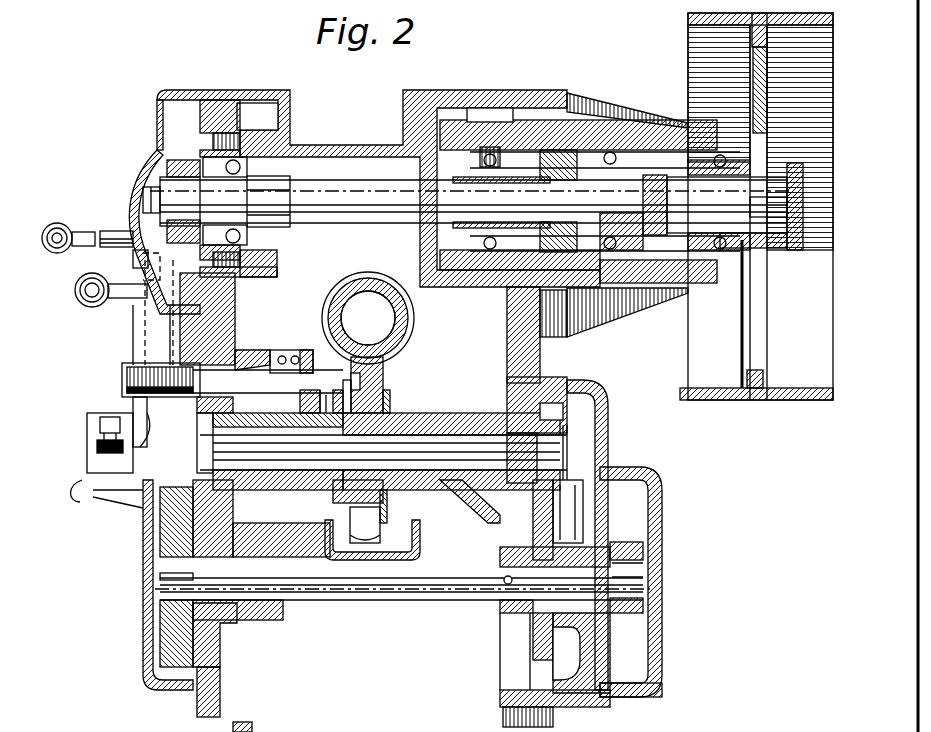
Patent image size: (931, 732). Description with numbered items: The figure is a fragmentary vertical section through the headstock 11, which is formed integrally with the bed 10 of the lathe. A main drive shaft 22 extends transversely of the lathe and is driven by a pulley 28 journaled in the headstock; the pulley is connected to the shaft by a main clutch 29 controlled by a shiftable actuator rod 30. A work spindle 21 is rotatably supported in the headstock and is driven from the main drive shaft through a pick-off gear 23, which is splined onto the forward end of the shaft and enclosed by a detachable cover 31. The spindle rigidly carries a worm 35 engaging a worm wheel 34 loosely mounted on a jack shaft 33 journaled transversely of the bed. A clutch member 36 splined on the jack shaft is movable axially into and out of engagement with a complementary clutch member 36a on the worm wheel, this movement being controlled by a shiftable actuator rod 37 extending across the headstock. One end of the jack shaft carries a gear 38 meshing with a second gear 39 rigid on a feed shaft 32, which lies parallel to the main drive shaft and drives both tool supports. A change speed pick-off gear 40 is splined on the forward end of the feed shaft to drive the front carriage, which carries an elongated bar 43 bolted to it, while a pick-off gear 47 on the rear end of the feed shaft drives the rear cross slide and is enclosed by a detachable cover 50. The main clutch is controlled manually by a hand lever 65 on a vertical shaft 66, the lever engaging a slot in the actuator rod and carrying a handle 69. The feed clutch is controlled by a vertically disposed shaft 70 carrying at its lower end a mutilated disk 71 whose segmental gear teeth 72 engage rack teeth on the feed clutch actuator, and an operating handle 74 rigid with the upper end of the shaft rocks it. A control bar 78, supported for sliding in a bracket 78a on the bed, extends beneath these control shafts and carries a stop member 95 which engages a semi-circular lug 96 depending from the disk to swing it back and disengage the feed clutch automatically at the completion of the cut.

The bed 10 is at (207, 681).
The headstock 11 is at (231, 92).
The work spindle 21 is at (378, 318).
The main drive shaft 22 is at (313, 186).
The pick-off gear 23 is at (182, 160).
The pulley 28 is at (703, 70).
The main clutch 29 is at (578, 100).
The shiftable actuator rod 30 is at (350, 200).
The detachable cover 31 is at (157, 133).
The feed shaft 32 is at (388, 600).
The jack shaft 33 is at (413, 421).
The worm wheel 34 is at (383, 360).
The worm 35 is at (337, 287).
The clutch member 36 is at (330, 402).
The complementary clutch member 36a is at (348, 387).
The shiftable actuator rod 37 is at (289, 368).
The gear 38 is at (568, 417).
The second gear 39 is at (600, 472).
The change speed pick-off gear 40 is at (170, 650).
The elongated bar 43 is at (213, 626).
The pick-off gear 47 is at (633, 558).
The detachable cover 50 is at (656, 697).
The hand lever 65 is at (127, 230).
The vertical shaft 66 is at (138, 266).
The handle 69 is at (60, 224).
The vertically disposed shaft 70 is at (140, 347).
The mutilated disk 71 is at (123, 368).
The gear teeth 72 is at (128, 390).
The operating handle 74 is at (77, 289).
The control bar 78 is at (93, 441).
The bracket 78a is at (92, 500).
The stop member 95 is at (147, 410).
The semi-circular lug 96 is at (160, 403).